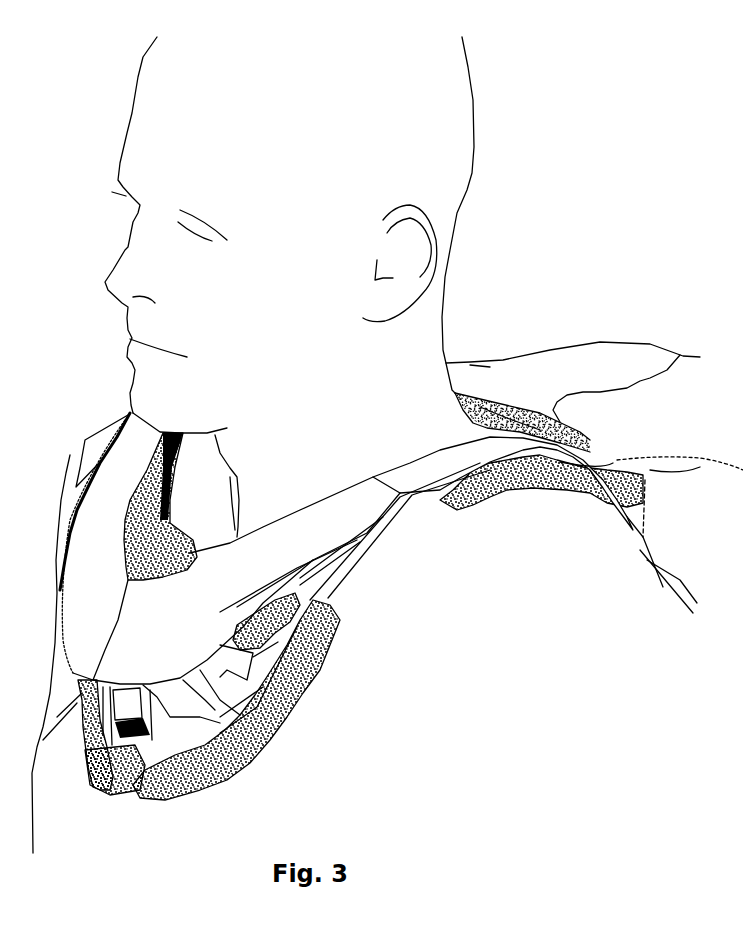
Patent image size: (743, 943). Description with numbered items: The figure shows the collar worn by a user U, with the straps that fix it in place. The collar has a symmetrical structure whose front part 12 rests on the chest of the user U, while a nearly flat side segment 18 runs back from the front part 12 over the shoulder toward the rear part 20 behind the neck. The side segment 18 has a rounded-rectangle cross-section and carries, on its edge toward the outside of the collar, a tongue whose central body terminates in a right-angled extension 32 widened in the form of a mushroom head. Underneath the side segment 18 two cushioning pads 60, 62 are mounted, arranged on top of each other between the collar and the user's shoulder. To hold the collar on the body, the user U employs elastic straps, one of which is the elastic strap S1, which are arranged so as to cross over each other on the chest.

The user U is at (160, 152).
The front part 12 is at (102, 570).
The side segment 18 is at (410, 472).
The rear part 20 is at (608, 362).
The right-angled extension 32 is at (538, 453).
The pad 60 is at (500, 502).
The pad 62 is at (613, 463).
The elastic strap S1 is at (358, 557).